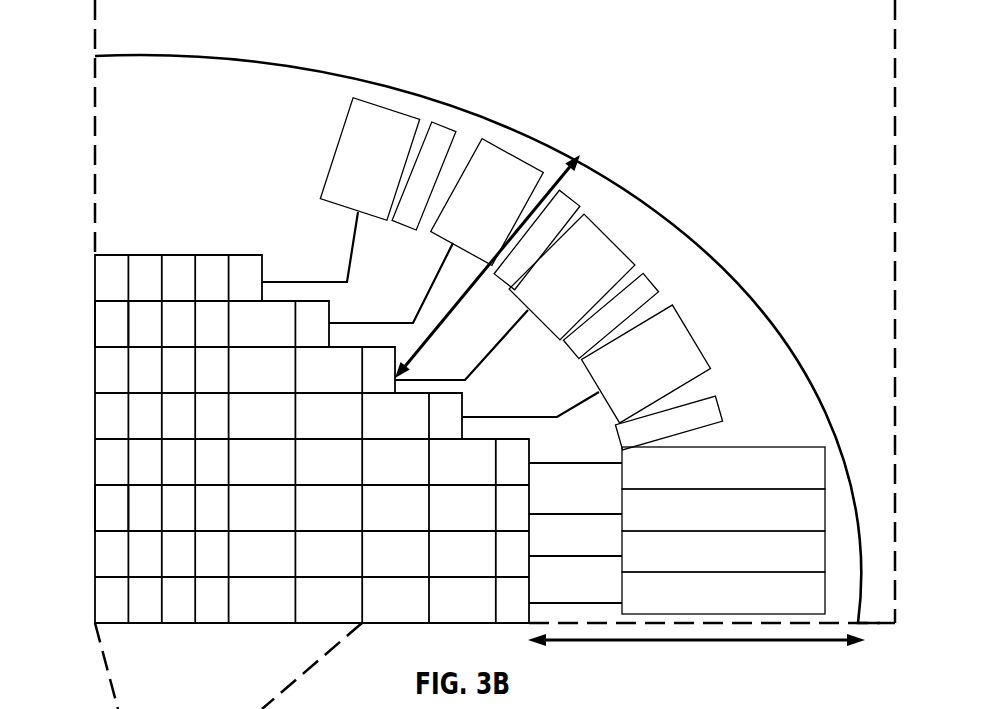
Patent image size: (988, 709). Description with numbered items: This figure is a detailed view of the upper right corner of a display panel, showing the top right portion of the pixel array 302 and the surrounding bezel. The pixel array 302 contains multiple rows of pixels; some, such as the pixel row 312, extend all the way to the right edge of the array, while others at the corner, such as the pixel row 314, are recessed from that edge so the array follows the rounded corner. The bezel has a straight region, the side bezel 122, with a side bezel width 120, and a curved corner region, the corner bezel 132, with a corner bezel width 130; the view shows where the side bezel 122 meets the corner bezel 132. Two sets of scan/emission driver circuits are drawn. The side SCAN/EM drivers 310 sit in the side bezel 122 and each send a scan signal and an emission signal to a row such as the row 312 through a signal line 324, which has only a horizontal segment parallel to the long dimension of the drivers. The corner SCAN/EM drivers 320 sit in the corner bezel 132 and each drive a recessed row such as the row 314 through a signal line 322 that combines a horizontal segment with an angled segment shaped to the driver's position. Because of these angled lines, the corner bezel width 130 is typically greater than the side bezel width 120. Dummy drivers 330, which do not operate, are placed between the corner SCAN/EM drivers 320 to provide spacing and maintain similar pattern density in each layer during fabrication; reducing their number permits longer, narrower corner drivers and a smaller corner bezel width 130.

The pixel array 302 is at (60, 276).
The pixel row 314 is at (112, 329).
The pixel row 312 is at (112, 513).
The signal line 322 is at (347, 266).
The corner bezel width 130 is at (557, 175).
The corner bezel 132 is at (677, 240).
The dummy driver 330 is at (657, 290).
The side bezel 122 is at (839, 533).
The corner SCAN/EM driver 320 is at (515, 260).
The side SCAN/EM driver 310 is at (723, 530).
The signal line 324 is at (583, 462).
The side bezel width 120 is at (647, 642).